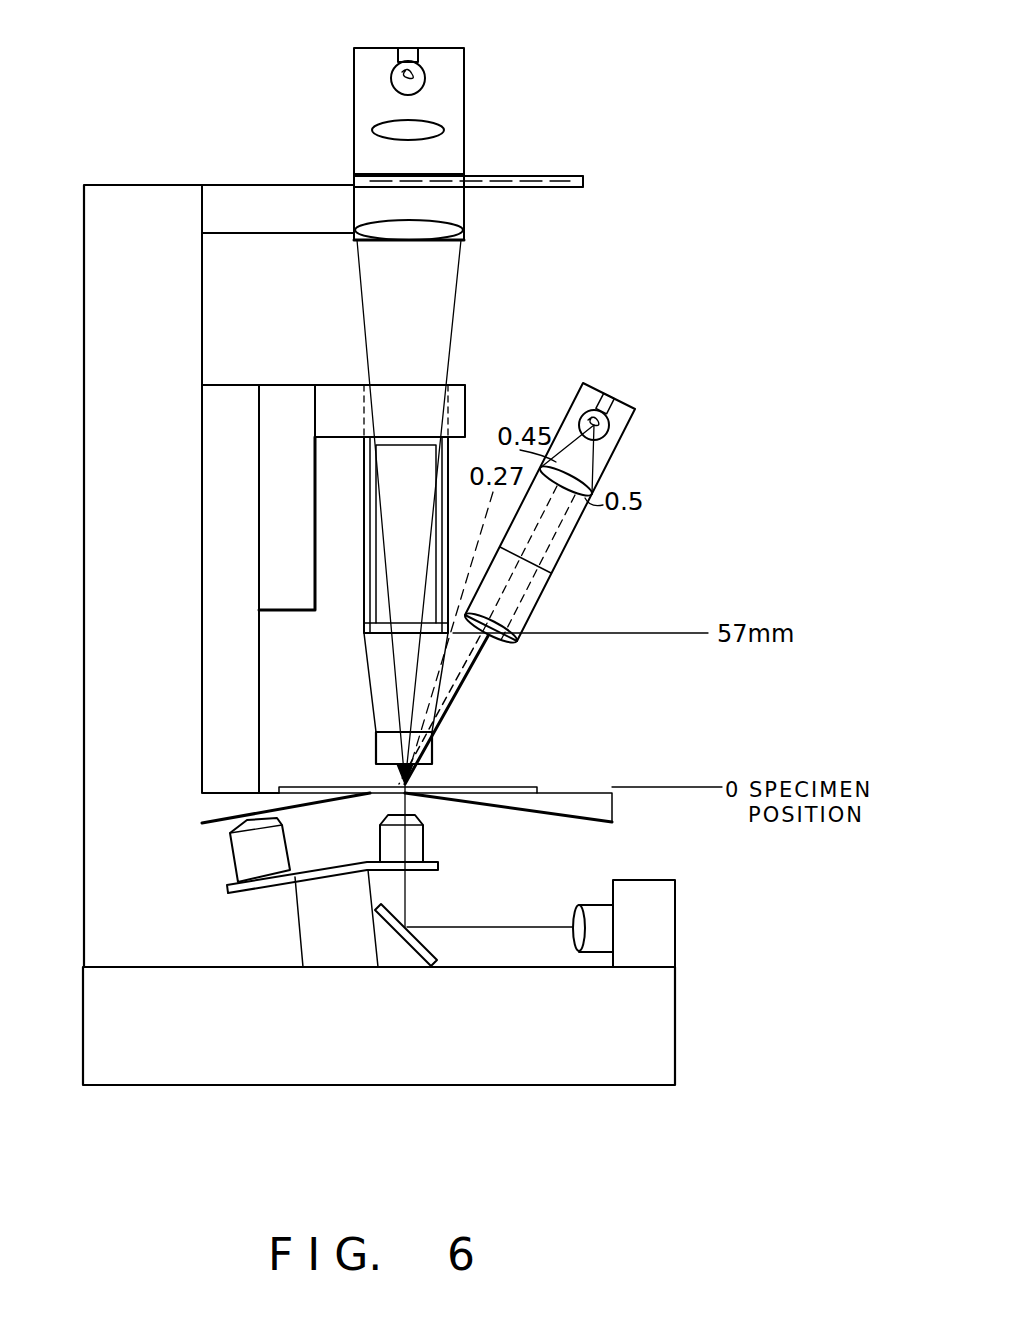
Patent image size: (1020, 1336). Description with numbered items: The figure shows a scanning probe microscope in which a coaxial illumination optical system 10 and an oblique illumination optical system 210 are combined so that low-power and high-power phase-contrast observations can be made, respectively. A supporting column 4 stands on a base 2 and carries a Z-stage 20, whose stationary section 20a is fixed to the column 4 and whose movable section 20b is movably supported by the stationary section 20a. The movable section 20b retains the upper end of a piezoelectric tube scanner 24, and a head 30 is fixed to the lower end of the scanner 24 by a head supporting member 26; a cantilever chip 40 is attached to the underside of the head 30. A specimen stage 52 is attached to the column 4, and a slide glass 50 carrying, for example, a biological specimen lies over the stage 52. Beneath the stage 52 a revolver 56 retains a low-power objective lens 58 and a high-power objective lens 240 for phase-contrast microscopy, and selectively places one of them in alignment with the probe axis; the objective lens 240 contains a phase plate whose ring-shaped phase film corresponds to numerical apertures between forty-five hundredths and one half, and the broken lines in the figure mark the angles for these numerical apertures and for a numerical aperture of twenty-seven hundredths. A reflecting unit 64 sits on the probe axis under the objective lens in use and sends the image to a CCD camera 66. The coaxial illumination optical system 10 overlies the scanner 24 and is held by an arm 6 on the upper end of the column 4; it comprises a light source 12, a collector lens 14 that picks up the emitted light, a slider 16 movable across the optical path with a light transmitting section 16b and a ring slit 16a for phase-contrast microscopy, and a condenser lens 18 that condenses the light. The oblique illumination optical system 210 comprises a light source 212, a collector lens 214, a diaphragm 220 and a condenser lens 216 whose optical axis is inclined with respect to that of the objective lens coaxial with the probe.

The base 2 is at (660, 1030).
The supporting column 4 is at (92, 670).
The arm 6 is at (231, 200).
The illumination optical system 10 is at (349, 66).
The light source 12 is at (447, 60).
The collector lens 14 is at (445, 130).
The slider 16 is at (597, 183).
The ring slit 16a is at (515, 176).
The light transmitting section 16b is at (375, 174).
The condenser lens 18 is at (455, 228).
The Z-stage 20 is at (262, 385).
The stationary section 20a is at (230, 385).
The movable section 20b is at (305, 385).
The piezoelectric tube scanner 24 is at (364, 575).
The head supporting member 26 is at (364, 640).
The head 30 is at (385, 733).
The cantilever chip 40 is at (400, 780).
The slide glass 50 is at (515, 787).
The specimen stage 52 is at (600, 823).
The revolver 56 is at (333, 877).
The low-power objective lens 58 is at (425, 850).
The reflecting unit 64 is at (434, 945).
The CCD camera 66 is at (675, 915).
The oblique illumination optical system 210 is at (627, 398).
The light source 212 is at (610, 430).
The collector lens 214 is at (590, 483).
The condenser lens 216 is at (496, 645).
The diaphragm 220 is at (552, 572).
The high-power objective lens 240 is at (258, 867).